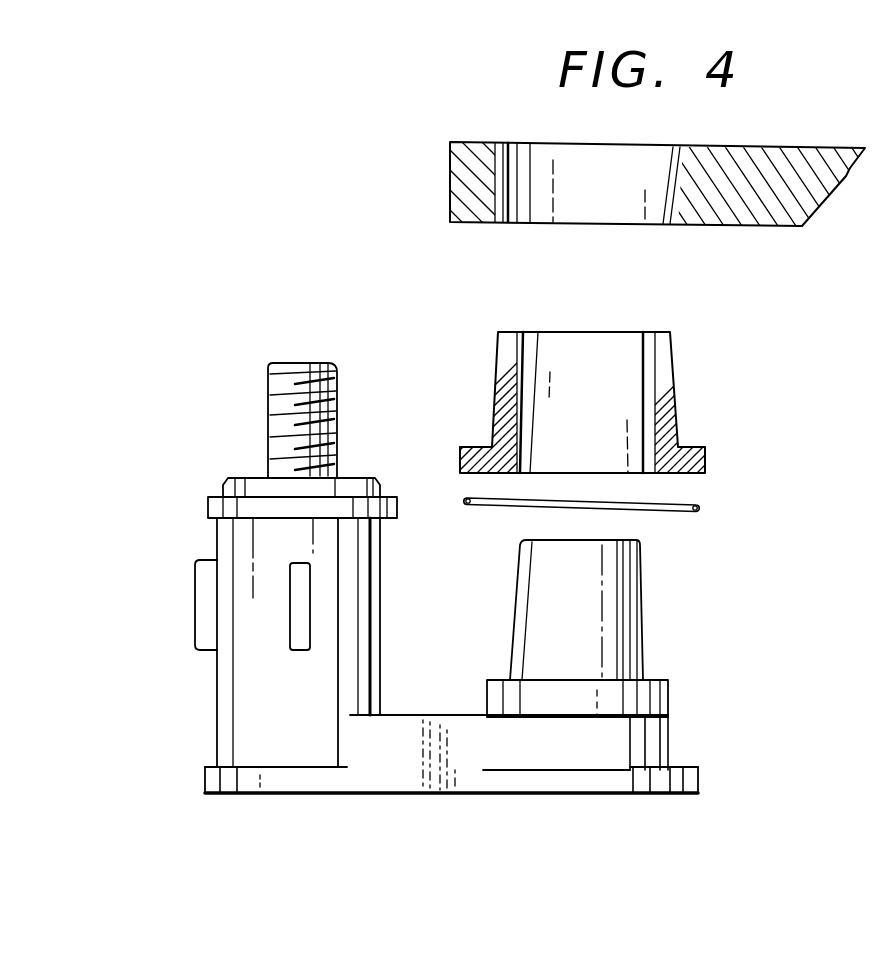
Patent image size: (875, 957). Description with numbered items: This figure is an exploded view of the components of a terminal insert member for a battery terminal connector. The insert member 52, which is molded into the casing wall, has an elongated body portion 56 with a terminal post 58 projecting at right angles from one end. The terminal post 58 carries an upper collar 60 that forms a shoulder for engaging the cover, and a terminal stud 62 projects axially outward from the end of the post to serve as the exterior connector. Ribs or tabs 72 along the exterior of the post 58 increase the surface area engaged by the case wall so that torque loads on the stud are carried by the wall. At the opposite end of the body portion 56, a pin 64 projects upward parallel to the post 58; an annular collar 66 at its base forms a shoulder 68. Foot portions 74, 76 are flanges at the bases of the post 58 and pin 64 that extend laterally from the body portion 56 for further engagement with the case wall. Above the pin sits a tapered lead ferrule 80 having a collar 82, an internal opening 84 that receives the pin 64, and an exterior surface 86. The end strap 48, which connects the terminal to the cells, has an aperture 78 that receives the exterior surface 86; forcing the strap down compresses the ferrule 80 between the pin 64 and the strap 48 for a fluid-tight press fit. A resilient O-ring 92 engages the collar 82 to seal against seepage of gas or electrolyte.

The end strap 48 is at (753, 178).
The aperture 78 is at (500, 182).
The ferrule 80 is at (690, 347).
The collar 82 is at (678, 448).
The internal opening 84 is at (520, 362).
The exterior surface 86 is at (497, 397).
The O-ring 92 is at (677, 500).
The terminal stud 62 is at (278, 405).
The upper collar 60 is at (255, 505).
The terminal post 58 is at (265, 553).
The tabs 72 is at (205, 607).
The pin 64 is at (588, 600).
The annular collar 66 is at (552, 693).
The shoulder 68 is at (657, 683).
The insert member 52 is at (383, 775).
The body portion 56 is at (467, 748).
The foot portion 74 is at (252, 778).
The foot portion 76 is at (657, 797).